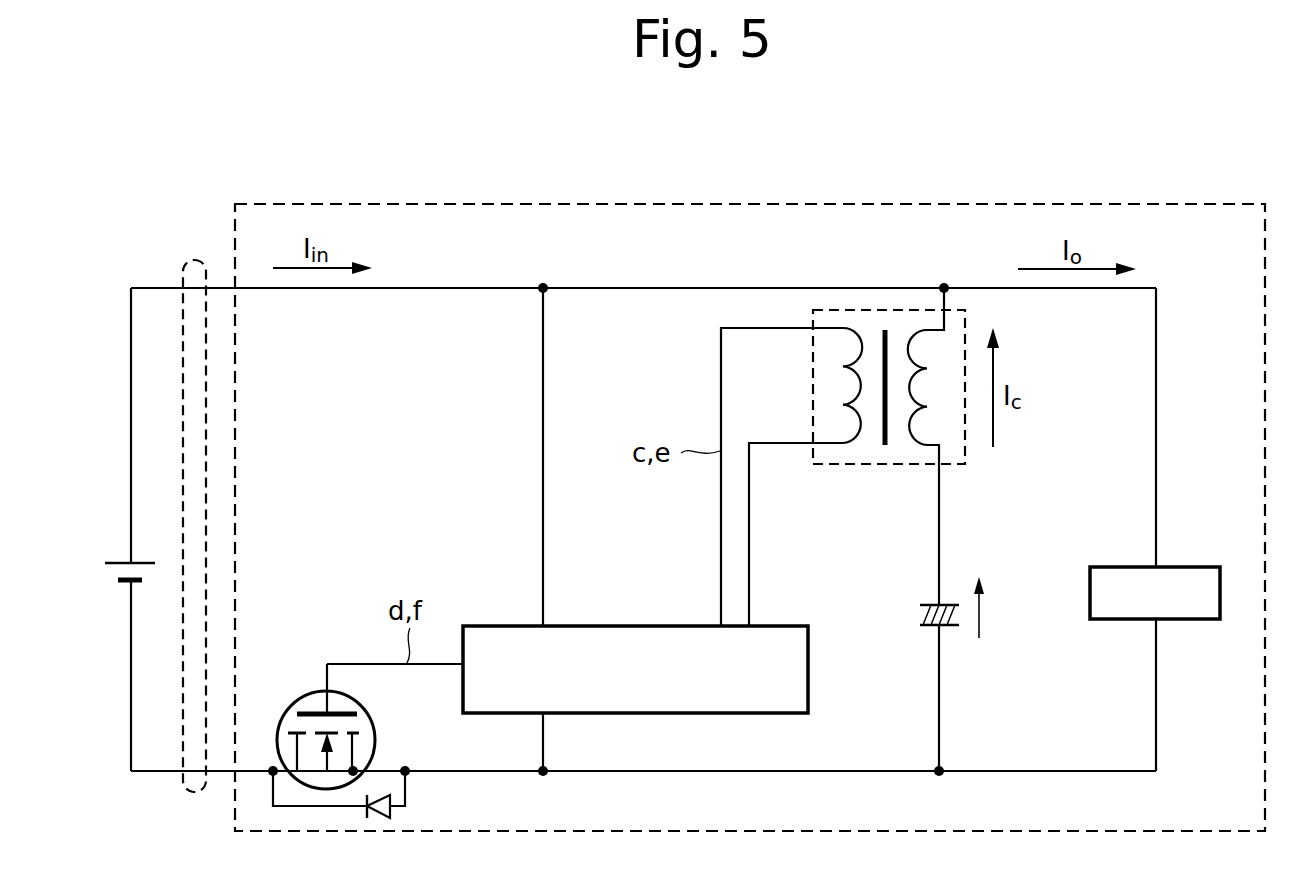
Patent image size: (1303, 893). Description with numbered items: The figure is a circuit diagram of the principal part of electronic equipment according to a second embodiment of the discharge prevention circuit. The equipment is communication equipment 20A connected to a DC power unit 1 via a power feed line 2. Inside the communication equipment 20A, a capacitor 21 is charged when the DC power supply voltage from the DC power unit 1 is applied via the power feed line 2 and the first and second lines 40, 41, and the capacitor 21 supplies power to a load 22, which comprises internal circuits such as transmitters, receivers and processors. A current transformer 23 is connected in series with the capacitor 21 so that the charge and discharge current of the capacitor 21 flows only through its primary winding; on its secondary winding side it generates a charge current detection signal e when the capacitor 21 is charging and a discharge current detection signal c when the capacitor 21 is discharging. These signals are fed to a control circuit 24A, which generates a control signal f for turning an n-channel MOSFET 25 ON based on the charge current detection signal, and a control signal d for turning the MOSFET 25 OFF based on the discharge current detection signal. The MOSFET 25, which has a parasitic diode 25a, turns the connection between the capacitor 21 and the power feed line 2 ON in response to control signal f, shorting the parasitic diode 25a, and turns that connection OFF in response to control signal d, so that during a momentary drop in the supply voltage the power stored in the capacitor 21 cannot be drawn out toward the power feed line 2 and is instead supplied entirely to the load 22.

The DC power unit 1 is at (118, 562).
The power feed line 2 is at (197, 258).
The communication equipment 20A is at (718, 204).
The capacitor 21 is at (920, 612).
The load 22 is at (1198, 567).
The current transformer 23 is at (873, 466).
The control circuit 24A is at (630, 626).
The n-channel MOSFET 25 is at (377, 730).
The parasitic diode 25a is at (381, 822).
The first line 40 is at (681, 288).
The second line 41 is at (667, 772).